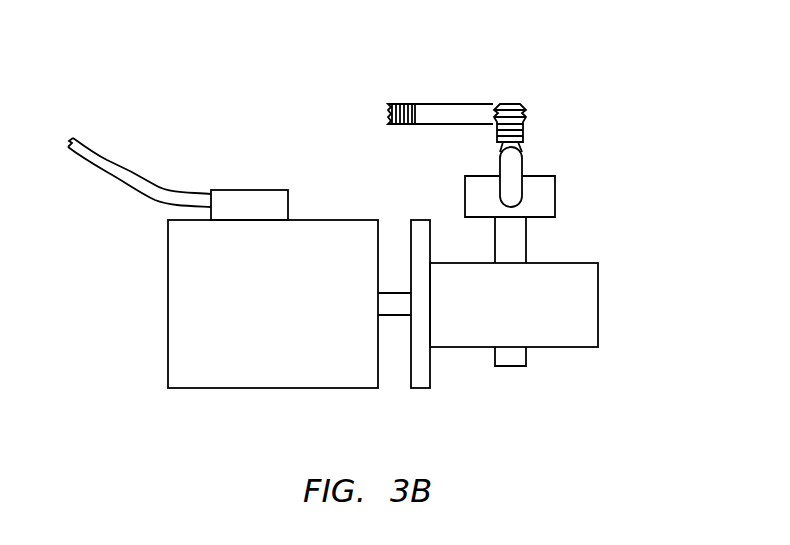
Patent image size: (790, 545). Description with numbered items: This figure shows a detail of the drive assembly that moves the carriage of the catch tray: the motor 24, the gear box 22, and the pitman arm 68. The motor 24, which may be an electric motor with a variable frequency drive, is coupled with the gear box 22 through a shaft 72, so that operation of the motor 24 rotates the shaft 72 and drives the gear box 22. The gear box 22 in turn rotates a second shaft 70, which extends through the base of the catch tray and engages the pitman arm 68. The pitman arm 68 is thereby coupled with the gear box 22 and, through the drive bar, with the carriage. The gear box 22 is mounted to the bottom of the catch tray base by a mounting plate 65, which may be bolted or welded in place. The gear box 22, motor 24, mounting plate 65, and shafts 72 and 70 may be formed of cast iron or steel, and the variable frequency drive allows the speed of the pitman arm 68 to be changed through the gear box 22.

The gear box 22 is at (567, 348).
The motor 24 is at (168, 310).
The mounting plate 65 is at (555, 177).
The pitman arm 68 is at (483, 103).
The shaft 70 is at (527, 238).
The shaft 72 is at (395, 317).